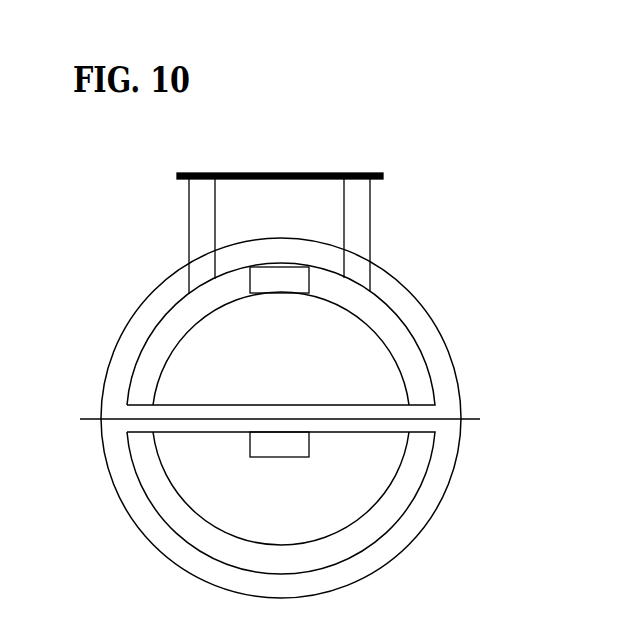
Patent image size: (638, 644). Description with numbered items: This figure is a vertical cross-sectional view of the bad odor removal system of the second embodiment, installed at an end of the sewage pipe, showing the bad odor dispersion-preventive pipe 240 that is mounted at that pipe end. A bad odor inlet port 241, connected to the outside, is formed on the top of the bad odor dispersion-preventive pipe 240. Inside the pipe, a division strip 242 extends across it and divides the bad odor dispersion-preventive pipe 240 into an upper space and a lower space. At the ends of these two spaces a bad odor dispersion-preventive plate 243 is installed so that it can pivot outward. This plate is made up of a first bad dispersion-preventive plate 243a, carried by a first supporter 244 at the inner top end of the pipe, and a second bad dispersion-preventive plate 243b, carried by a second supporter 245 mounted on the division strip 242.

The bad odor dispersion-preventive pipe 240 is at (157, 355).
The bad odor inlet port 241 is at (280, 173).
The division strip 242 is at (90, 421).
The bad odor dispersion-preventive plate 243 is at (331, 440).
The first bad dispersion-preventive plate 243a is at (373, 362).
The second bad dispersion-preventive plate 243b is at (322, 522).
The first supporter 244 is at (293, 282).
The second supporter 245 is at (307, 456).